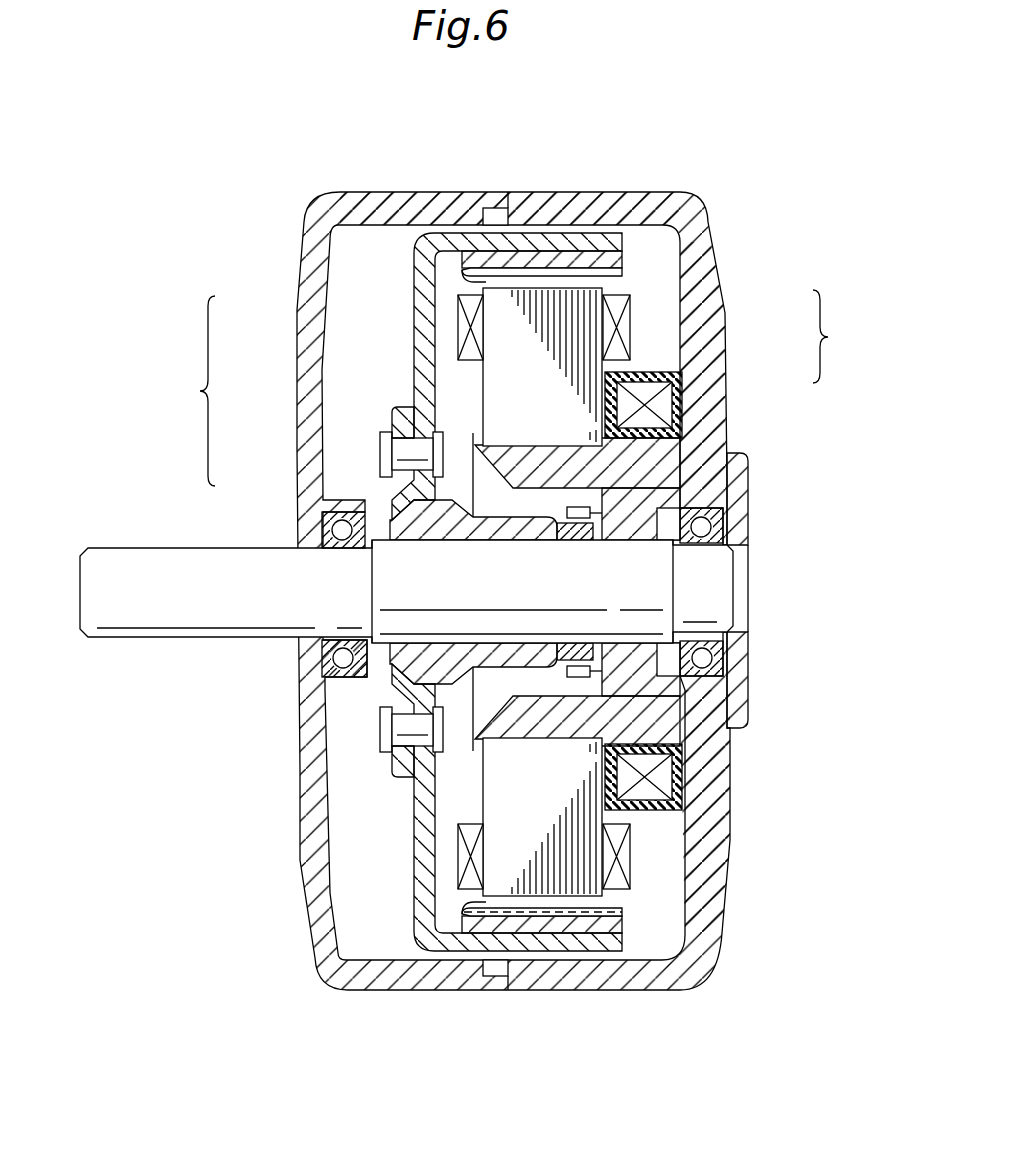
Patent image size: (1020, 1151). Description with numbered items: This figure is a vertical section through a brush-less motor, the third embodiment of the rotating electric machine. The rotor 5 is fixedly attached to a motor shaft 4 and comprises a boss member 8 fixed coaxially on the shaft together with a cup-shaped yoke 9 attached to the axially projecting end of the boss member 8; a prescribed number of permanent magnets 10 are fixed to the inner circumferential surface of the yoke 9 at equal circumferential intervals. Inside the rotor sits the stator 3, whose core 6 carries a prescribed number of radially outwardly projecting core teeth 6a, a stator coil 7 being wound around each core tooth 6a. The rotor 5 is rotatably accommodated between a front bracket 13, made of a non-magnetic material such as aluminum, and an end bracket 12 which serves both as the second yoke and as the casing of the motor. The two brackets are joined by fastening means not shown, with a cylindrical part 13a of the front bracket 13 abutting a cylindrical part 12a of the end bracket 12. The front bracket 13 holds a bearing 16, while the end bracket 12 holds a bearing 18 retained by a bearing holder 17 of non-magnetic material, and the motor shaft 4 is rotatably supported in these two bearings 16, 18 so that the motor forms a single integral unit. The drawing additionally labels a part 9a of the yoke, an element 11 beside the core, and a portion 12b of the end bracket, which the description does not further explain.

The stator 3 is at (601, 590).
The motor shaft 4 is at (168, 622).
The rotor 5 is at (401, 592).
The core 6 is at (587, 362).
The core teeth 6a is at (495, 383).
The stator coil 7 is at (627, 312).
The boss member 8 is at (407, 513).
The yoke 9 is at (412, 320).
The bracket corner 9a is at (440, 288).
The permanent magnets 10 is at (584, 230).
The magnet 11 is at (660, 408).
The end bracket 12 is at (661, 192).
The cylindrical part 12a is at (520, 742).
The case projection 12b is at (525, 208).
The front bracket 13 is at (318, 241).
The cylindrical part 13a is at (420, 192).
The bearing 16 is at (328, 655).
The bearing holder 17 is at (743, 497).
The bearing 18 is at (726, 675).